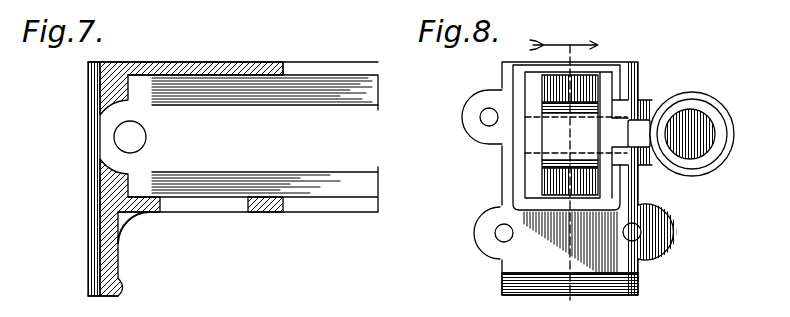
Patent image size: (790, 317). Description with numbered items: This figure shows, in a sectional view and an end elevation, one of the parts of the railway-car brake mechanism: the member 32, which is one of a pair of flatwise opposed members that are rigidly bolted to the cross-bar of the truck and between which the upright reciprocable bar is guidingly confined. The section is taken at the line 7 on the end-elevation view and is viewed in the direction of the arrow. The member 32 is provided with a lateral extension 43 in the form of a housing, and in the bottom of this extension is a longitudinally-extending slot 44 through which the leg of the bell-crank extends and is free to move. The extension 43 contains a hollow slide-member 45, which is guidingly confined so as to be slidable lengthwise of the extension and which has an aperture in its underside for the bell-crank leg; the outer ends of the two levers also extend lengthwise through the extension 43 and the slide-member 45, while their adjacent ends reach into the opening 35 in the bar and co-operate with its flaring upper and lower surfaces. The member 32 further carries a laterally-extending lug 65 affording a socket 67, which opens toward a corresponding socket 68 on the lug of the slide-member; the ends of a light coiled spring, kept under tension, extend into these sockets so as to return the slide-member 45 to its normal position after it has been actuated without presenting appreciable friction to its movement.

In FIG. 8, the section line 7 is at (564, 157).
In FIG. 7, the member 32 is at (118, 258).
In FIG. 8, the member 32 is at (497, 248).
In FIG. 8, the opening 35 is at (555, 131).
In FIG. 7, the lateral extension 43 is at (239, 62).
In FIG. 8, the lateral extension 43 is at (594, 65).
In FIG. 7, the longitudinally-extending slot 44 is at (215, 210).
In FIG. 7, the hollow slide-member 45 is at (323, 210).
In FIG. 8, the laterally-extending lug 65 is at (705, 107).
In FIG. 8, the socket 67 is at (707, 150).
In FIG. 8, the socket 68 is at (606, 295).